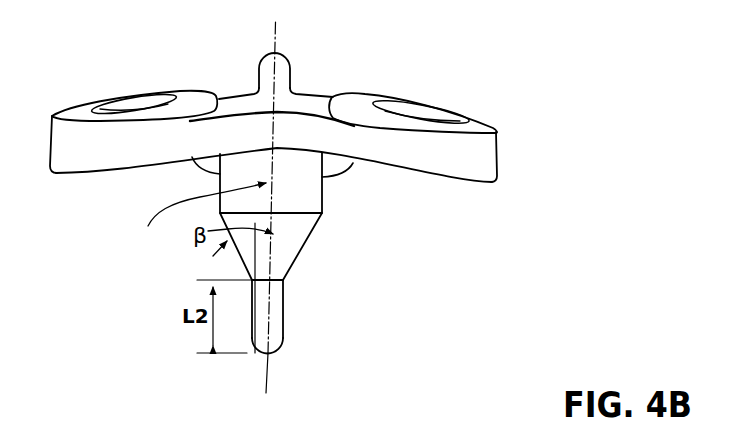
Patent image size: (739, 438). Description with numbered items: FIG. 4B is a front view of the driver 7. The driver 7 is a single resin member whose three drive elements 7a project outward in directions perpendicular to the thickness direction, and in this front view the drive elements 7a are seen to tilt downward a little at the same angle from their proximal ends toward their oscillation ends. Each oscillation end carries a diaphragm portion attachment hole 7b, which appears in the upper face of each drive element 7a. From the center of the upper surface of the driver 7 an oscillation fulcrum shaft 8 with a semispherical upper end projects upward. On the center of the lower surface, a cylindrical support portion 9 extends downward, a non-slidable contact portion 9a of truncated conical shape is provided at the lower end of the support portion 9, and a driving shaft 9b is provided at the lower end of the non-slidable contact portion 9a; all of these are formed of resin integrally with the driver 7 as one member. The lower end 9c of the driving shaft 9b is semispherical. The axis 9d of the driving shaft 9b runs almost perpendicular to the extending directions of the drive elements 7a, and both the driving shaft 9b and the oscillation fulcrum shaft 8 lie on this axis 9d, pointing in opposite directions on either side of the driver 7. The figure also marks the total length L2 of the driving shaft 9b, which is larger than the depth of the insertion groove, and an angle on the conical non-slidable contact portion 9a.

The driver 7 is at (215, 136).
The drive element 7a is at (80, 174).
The diaphragm portion attachment hole 7b is at (130, 97).
The oscillation fulcrum shaft 8 is at (290, 63).
The support portion 9 is at (324, 193).
The non-slidable contact portion 9a is at (303, 246).
The driving shaft 9b is at (284, 318).
The lower end of the driving shaft 9c is at (273, 347).
The axis of the driving shaft 9d is at (199, 219).